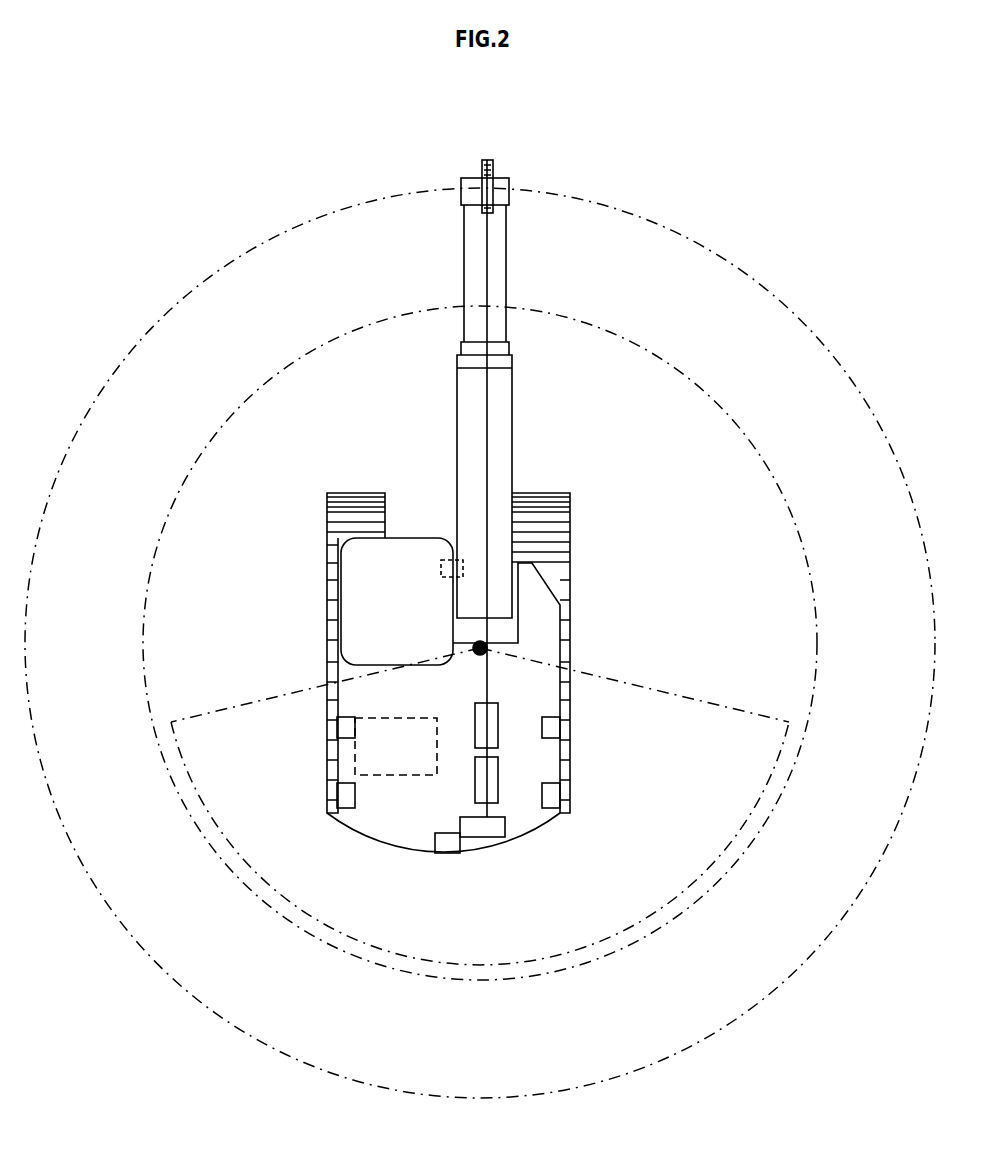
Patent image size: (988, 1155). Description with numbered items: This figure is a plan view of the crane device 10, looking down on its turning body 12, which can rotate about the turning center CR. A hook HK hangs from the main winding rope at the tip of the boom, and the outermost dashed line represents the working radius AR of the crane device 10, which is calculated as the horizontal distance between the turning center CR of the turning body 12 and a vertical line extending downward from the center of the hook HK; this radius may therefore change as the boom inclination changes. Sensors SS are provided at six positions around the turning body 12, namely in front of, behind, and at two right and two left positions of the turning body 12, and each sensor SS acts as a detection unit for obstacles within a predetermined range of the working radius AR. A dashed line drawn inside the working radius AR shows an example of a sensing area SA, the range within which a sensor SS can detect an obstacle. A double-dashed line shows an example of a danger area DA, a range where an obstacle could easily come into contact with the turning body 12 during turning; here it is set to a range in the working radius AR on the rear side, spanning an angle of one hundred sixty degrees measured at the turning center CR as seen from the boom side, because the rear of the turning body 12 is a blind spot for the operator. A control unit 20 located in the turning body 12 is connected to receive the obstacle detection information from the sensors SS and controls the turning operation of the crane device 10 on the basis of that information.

The crane device 10 is at (481, 497).
The turning body 12 is at (545, 695).
The control unit 20 is at (393, 775).
The hook HK is at (497, 162).
The working radius AR is at (607, 205).
The sensing area SA is at (740, 437).
The sensor SS is at (450, 558).
The turning center CR is at (488, 646).
The danger area DA is at (740, 833).